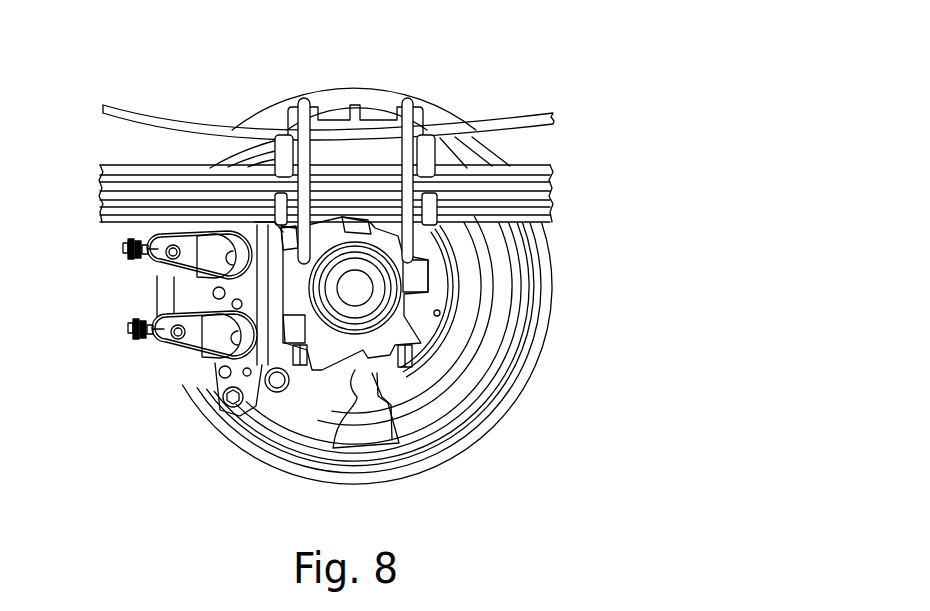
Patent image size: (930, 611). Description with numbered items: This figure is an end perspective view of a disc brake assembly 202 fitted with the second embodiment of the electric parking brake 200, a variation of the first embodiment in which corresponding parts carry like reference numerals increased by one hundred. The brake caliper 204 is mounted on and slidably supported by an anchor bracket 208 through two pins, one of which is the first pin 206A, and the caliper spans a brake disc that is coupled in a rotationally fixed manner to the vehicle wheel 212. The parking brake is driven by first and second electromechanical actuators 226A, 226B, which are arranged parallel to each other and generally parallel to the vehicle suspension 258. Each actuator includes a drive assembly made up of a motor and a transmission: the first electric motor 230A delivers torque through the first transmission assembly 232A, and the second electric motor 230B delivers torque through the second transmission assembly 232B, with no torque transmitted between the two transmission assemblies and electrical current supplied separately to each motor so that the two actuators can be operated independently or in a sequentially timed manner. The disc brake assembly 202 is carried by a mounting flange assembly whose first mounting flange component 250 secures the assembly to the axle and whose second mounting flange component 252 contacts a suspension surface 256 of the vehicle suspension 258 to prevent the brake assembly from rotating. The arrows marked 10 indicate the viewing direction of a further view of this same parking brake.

The sensor 10 is at (96, 240).
The electric parking brake 200 is at (518, 468).
The disc brake assembly 202 is at (233, 342).
The brake caliper 204 is at (190, 296).
The first pin 206A is at (228, 407).
The anchor bracket 208 is at (250, 412).
The vehicle wheel 212 is at (276, 108).
The first electromechanical actuator 226A is at (188, 366).
The second electromechanical actuator 226B is at (203, 222).
The first electric motor 230A is at (178, 338).
The second electric motor 230B is at (172, 247).
The first transmission assembly 232A is at (212, 380).
The second transmission assembly 232B is at (242, 258).
The first mounting flange component 250 is at (428, 305).
The second mounting flange component 252 is at (392, 242).
The suspension surface 256 is at (388, 222).
The vehicle suspension 258 is at (344, 183).